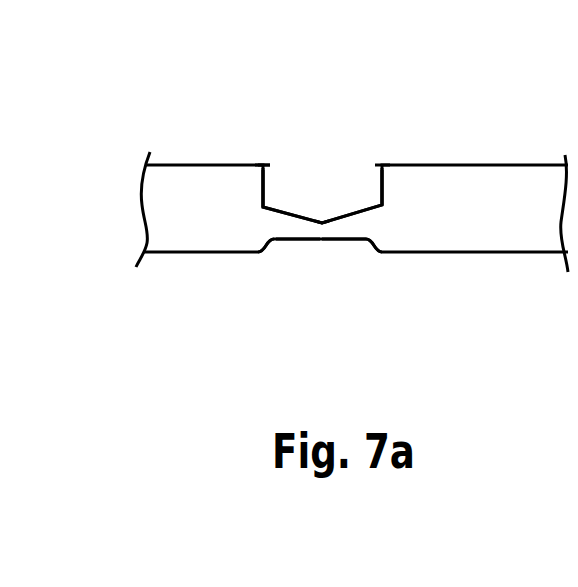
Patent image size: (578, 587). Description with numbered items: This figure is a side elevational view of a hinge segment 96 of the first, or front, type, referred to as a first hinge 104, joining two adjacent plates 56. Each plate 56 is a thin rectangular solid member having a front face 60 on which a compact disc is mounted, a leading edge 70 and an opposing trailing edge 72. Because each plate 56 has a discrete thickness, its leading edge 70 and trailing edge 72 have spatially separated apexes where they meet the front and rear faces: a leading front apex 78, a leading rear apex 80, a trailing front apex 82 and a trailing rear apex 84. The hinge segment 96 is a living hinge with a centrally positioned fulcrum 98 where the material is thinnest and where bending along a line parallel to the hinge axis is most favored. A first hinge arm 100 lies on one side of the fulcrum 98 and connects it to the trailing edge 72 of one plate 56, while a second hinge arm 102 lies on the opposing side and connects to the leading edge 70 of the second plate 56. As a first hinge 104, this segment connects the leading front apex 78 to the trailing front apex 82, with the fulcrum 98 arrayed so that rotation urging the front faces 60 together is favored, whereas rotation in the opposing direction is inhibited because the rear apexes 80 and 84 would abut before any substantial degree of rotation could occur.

The plate 56 is at (523, 226).
The front face 60 is at (174, 253).
The leading edge 70 is at (384, 198).
The trailing edge 72 is at (262, 195).
The leading front apex 78 is at (268, 249).
The leading rear apex 80 is at (263, 165).
The trailing front apex 82 is at (378, 253).
The trailing rear apex 84 is at (383, 165).
The hinge segment 96 is at (324, 68).
The fulcrum 98 is at (322, 222).
The first hinge arm 100 is at (290, 228).
The second hinge arm 102 is at (357, 228).
The first hinge 104 is at (265, 90).